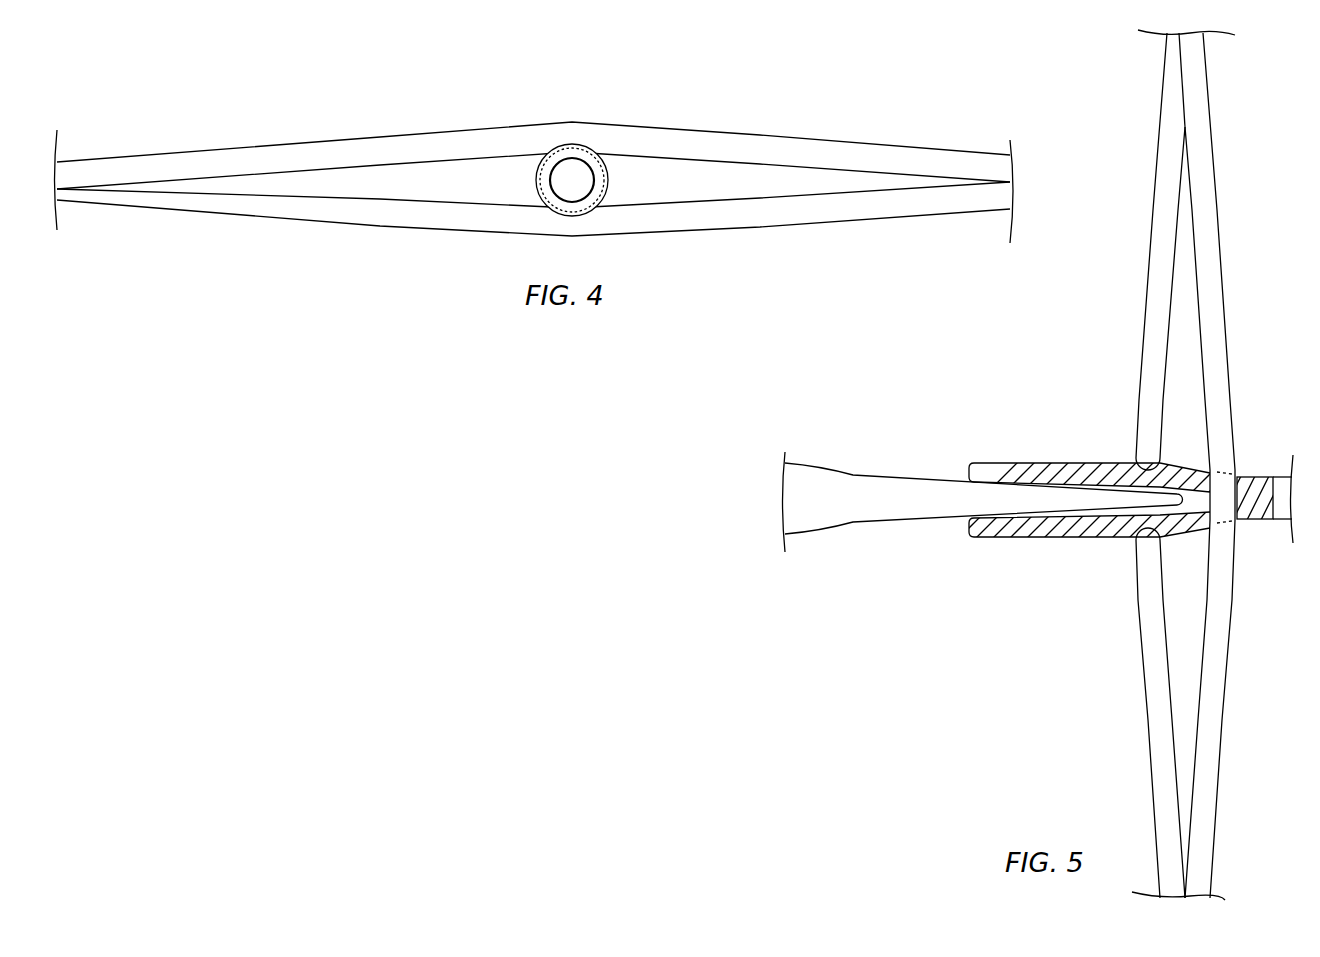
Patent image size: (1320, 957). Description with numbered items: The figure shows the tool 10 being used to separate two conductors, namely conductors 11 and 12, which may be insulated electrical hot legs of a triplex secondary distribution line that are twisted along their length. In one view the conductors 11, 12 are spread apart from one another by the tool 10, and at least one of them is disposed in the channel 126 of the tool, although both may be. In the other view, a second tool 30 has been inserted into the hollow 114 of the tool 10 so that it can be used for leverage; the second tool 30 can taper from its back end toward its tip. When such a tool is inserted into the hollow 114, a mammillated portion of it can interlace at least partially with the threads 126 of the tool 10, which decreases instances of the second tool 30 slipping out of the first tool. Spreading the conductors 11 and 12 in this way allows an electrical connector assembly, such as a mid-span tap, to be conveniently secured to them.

In FIG. 4, the tool 10 is at (545, 150).
In FIG. 5, the tool 10 is at (1040, 460).
In FIG. 4, the conductor 11 is at (337, 153).
In FIG. 5, the conductor 11 is at (1155, 345).
In FIG. 4, the conductor 12 is at (333, 212).
In FIG. 5, the conductor 12 is at (1222, 655).
In FIG. 5, the second tool 30 is at (820, 535).
In FIG. 5, the hollow 114 is at (1090, 512).
In FIG. 4, the channel 126 is at (602, 180).
In FIG. 5, the channel 126 is at (1137, 548).